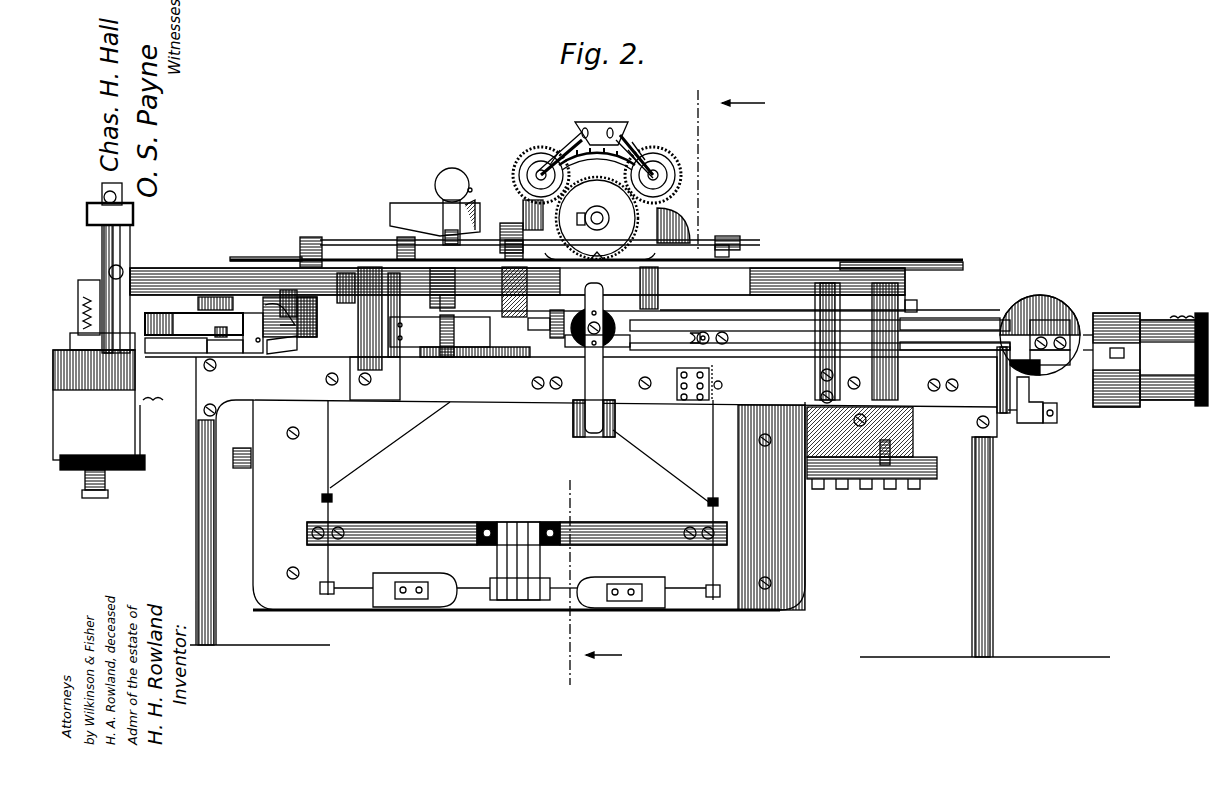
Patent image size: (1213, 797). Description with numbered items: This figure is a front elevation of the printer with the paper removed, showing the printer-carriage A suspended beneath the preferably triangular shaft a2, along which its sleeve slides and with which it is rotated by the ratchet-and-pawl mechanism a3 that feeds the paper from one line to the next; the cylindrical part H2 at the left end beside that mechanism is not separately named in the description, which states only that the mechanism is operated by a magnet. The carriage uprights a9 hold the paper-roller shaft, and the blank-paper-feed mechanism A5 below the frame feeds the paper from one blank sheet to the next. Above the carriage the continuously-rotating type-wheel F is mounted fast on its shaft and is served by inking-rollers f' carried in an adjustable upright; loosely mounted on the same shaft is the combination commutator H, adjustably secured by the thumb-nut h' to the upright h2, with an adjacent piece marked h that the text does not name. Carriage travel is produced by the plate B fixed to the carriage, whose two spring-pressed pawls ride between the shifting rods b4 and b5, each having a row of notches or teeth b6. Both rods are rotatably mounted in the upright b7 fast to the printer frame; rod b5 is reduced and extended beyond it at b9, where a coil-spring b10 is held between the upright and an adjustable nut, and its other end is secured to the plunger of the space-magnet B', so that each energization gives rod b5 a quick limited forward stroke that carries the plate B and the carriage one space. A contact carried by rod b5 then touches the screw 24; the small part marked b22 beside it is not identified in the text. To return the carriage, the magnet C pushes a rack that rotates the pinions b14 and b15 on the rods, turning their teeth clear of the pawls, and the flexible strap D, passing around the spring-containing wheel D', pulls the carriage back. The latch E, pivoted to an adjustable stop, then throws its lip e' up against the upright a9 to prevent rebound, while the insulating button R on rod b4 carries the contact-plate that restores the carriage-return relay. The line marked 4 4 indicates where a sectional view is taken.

The section line 4 4 is at (664, 386).
The latch E is at (280, 350).
The shaft a2 is at (546, 285).
The ratchet-and-pawl mechanism a3 is at (100, 290).
The cylinder H2 is at (108, 415).
The flexible device D is at (194, 301).
The wheel D' is at (162, 292).
The lip e' is at (263, 338).
The arm h is at (443, 213).
The thumb-nut h' is at (439, 185).
The upright h2 is at (470, 190).
The uprights a9 is at (300, 252).
The type-wheel F is at (615, 232).
The combination commutator H is at (628, 128).
The inking-rollers f' is at (593, 172).
The button R is at (560, 320).
The printer-carriage A is at (432, 333).
The coil-spring b10 is at (487, 358).
The reduced extension of rod b9 is at (508, 362).
The upright b7 is at (553, 353).
The plate B is at (820, 333).
The shifting rod b4 is at (940, 330).
The shifting rod b5 is at (950, 352).
The pinion b15 is at (1000, 380).
The magnet C is at (1030, 312).
The pinion b14 is at (1055, 322).
The bracket b22 is at (1027, 423).
The screw 24 is at (1062, 426).
The space-magnet B' is at (1145, 359).
The notches or teeth b6 is at (1120, 408).
The blank-paper-feed mechanism A5 is at (500, 565).